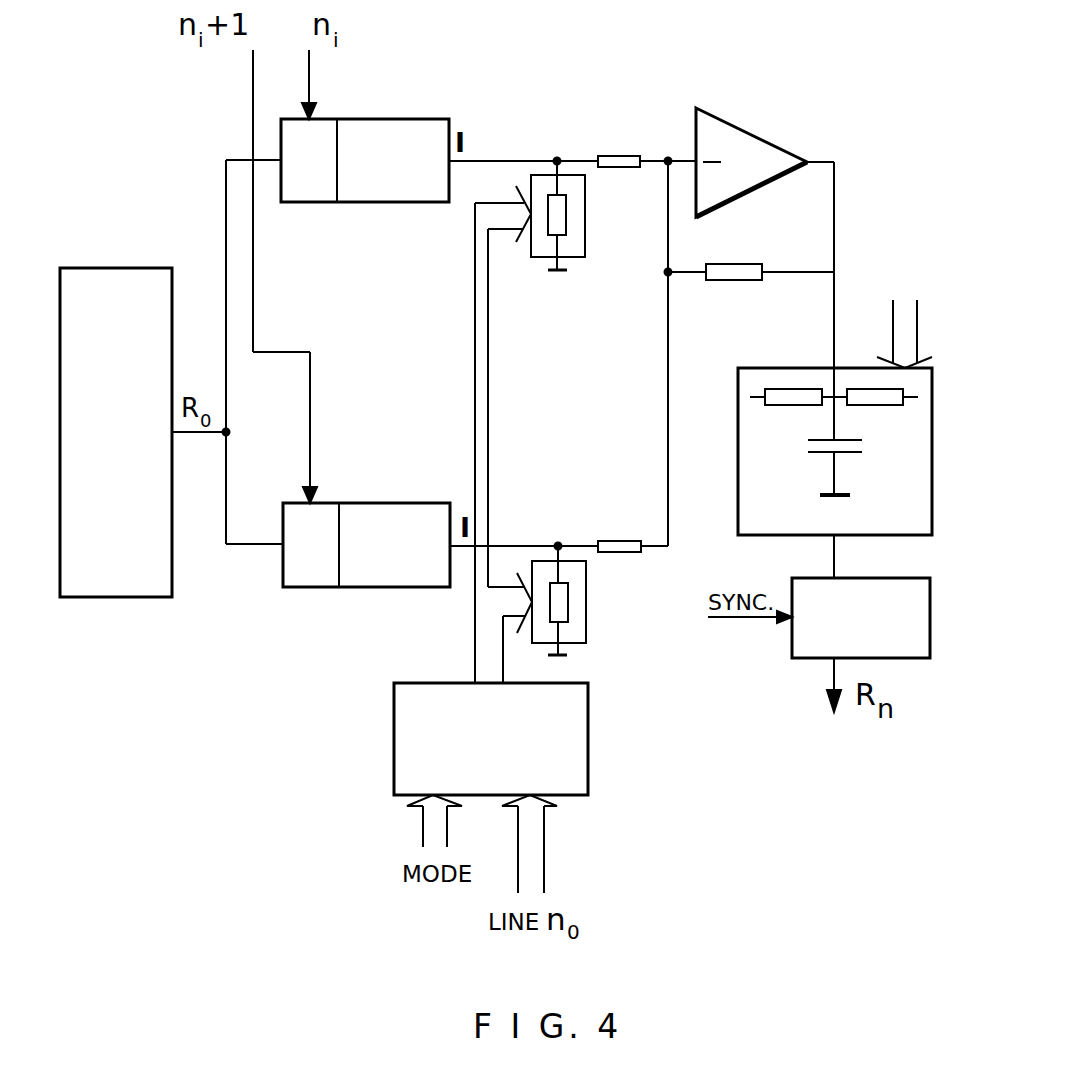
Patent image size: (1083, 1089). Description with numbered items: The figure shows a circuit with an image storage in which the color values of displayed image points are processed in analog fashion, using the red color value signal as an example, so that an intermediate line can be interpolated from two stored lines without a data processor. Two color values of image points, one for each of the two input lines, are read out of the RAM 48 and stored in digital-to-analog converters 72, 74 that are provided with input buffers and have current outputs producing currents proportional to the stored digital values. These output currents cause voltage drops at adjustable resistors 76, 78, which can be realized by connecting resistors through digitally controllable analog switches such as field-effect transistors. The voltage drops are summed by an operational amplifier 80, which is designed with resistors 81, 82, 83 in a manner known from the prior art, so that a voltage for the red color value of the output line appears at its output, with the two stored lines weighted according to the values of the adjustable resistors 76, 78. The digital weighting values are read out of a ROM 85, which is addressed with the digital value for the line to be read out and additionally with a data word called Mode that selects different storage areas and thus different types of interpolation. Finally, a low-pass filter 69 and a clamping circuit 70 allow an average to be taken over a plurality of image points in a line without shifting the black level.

The RAM 48 is at (118, 282).
The digital-to-analog converter 72 is at (365, 119).
The digital-to-analog converter 74 is at (367, 503).
The adjustable resistor 76 is at (587, 242).
The adjustable resistor 78 is at (587, 630).
The operational amplifier 80 is at (747, 131).
The resistor 81 is at (617, 156).
The resistor 82 is at (617, 541).
The resistor 83 is at (753, 264).
The low-pass filter 69 is at (793, 368).
The clamping circuit 70 is at (820, 660).
The ROM 85 is at (590, 755).